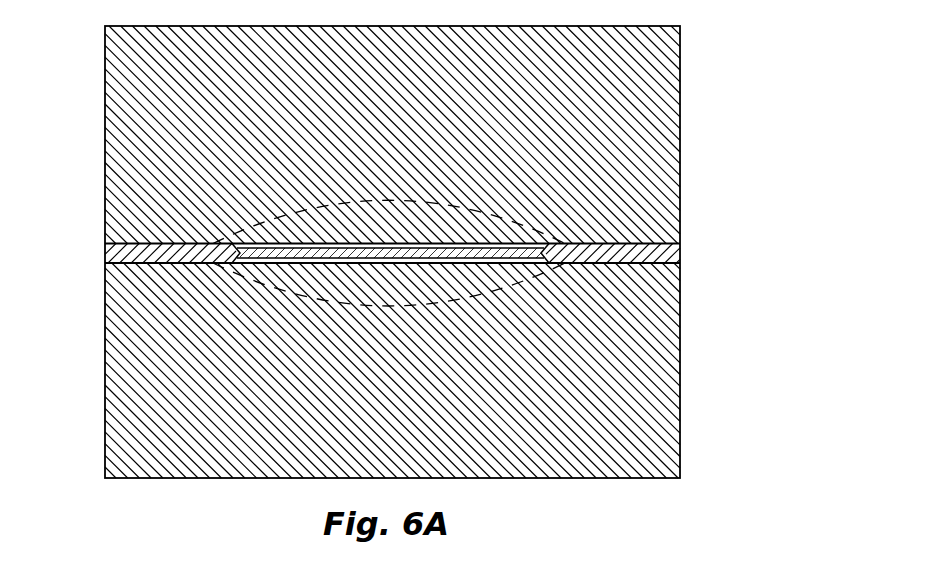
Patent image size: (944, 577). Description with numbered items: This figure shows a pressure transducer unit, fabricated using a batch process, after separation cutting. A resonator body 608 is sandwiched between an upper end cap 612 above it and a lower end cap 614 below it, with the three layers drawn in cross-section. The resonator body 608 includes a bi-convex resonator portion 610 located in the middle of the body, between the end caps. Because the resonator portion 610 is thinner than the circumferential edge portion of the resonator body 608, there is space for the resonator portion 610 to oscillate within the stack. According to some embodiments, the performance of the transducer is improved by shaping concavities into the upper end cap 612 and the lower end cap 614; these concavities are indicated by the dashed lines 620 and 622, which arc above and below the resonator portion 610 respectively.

The resonator body 608 is at (680, 254).
The bi-convex resonator portion 610 is at (232, 244).
The upper end cap 612 is at (680, 129).
The lower end cap 614 is at (680, 384).
The dashed line 620 is at (270, 212).
The dashed line 622 is at (253, 280).